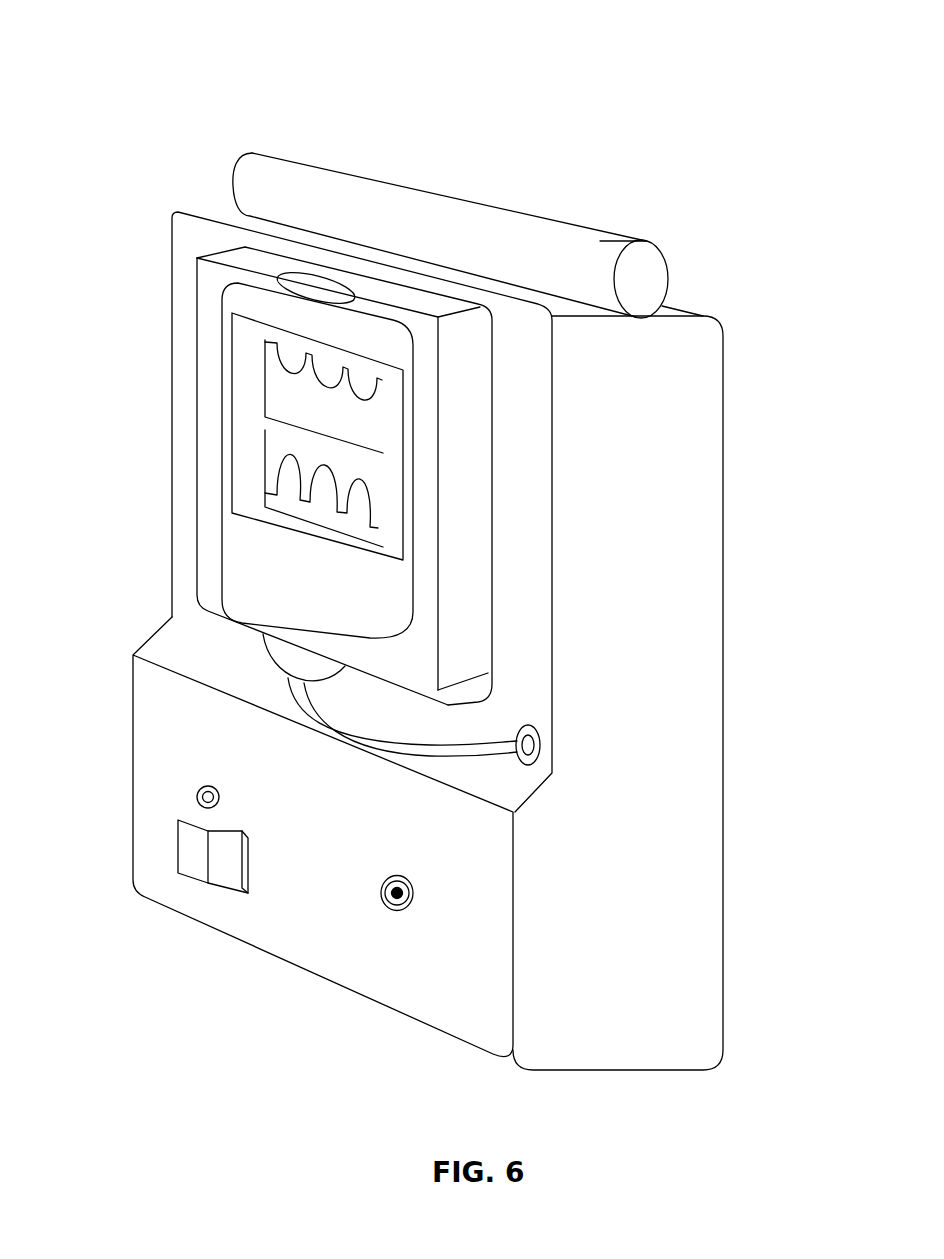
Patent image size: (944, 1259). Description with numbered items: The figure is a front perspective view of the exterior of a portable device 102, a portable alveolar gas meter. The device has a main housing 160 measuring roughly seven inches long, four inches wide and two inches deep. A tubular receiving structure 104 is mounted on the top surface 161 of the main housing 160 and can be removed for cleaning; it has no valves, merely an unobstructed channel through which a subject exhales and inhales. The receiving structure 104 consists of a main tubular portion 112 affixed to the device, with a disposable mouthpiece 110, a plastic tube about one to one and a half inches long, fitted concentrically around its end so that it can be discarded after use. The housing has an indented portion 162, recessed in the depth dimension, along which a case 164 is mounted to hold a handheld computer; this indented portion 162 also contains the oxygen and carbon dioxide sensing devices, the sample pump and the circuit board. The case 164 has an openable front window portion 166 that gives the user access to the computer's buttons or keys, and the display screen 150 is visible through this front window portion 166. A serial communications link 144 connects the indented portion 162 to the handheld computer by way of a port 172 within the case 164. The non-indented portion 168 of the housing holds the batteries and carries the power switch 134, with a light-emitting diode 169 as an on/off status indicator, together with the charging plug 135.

The portable device 102 is at (102, 43).
The tubular receiving structure 104 is at (450, 213).
The main tubular portion 112 is at (338, 172).
The disposable mouthpiece 110 is at (572, 206).
The top surface 161 is at (210, 190).
The indented portion 162 is at (674, 419).
The main housing 160 is at (650, 908).
The non-indented portion 168 is at (692, 1048).
The case 164 is at (193, 354).
The front window portion 166 is at (247, 553).
The display screen 150 is at (320, 541).
The port 172 is at (254, 654).
The serial communications link 144 is at (443, 738).
The light-emitting diode 169 is at (197, 797).
The power switch 134 is at (228, 910).
The charging plug 135 is at (396, 910).